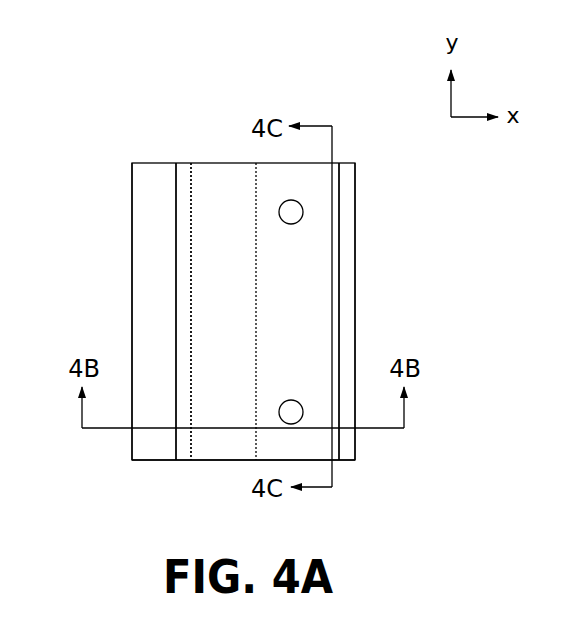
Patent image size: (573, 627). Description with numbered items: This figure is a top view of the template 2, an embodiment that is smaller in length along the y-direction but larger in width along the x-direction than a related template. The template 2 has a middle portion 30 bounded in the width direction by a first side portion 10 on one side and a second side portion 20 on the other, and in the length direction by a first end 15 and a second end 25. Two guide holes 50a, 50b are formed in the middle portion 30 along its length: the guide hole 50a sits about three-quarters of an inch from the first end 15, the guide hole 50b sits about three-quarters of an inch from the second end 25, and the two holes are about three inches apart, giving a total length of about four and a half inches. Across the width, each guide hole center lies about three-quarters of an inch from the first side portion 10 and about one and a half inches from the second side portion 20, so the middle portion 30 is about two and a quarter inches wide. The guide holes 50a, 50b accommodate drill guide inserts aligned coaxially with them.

The template 2 is at (106, 49).
The first side portion 10 is at (355, 233).
The first end 15 is at (172, 460).
The second side portion 20 is at (132, 257).
The second end 25 is at (210, 163).
The middle portion 30 is at (229, 232).
The guide hole 50a is at (293, 410).
The guide hole 50b is at (279, 211).